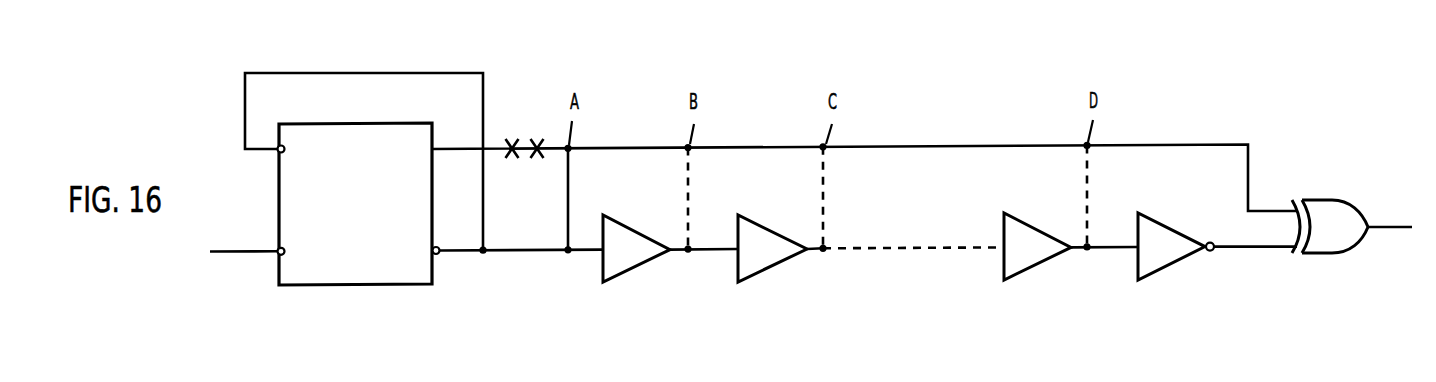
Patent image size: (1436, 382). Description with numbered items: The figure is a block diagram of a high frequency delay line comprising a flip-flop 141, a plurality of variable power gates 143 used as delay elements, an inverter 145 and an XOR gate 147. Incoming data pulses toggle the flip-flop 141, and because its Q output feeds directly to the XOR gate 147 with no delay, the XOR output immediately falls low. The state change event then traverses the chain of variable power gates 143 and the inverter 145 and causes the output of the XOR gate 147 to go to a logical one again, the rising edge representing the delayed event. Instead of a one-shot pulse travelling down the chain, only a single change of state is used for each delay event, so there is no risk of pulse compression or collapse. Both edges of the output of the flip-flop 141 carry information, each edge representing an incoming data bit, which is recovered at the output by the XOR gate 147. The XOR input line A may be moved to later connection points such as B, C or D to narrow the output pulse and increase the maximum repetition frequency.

The flip-flop 141 is at (368, 129).
The variable power gates 143 is at (619, 229).
The inverter 145 is at (1152, 226).
The XOR gate 147 is at (1327, 208).